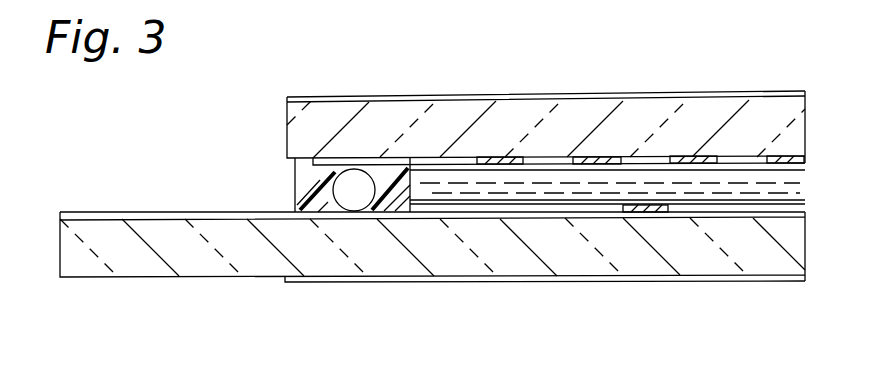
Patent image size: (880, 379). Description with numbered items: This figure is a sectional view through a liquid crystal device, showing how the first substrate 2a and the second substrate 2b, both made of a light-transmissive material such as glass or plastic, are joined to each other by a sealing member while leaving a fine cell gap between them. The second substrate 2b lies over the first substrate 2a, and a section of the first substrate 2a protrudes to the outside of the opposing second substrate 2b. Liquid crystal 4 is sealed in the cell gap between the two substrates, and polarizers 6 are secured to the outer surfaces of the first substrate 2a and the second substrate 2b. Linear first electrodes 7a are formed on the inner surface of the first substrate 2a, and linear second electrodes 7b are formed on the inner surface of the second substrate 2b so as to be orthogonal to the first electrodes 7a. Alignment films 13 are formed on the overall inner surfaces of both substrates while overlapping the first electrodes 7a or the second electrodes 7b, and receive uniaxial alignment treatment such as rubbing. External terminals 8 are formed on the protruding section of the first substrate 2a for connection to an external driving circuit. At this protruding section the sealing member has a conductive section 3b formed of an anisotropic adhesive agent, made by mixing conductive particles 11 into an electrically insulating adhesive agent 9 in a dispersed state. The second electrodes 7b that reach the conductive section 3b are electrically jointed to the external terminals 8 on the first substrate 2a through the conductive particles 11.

The first substrate 2a is at (358, 250).
The second substrate 2b is at (332, 114).
The conductive section 3b is at (482, 161).
The liquid crystal 4 is at (752, 192).
The polarizer 6 is at (582, 92).
The first electrode 7a is at (550, 213).
The second electrode 7b is at (413, 172).
The external terminal 8 is at (108, 212).
The electrically insulating adhesive agent 9 is at (295, 168).
The conductive particle 11 is at (315, 190).
The alignment film 13 is at (750, 173).